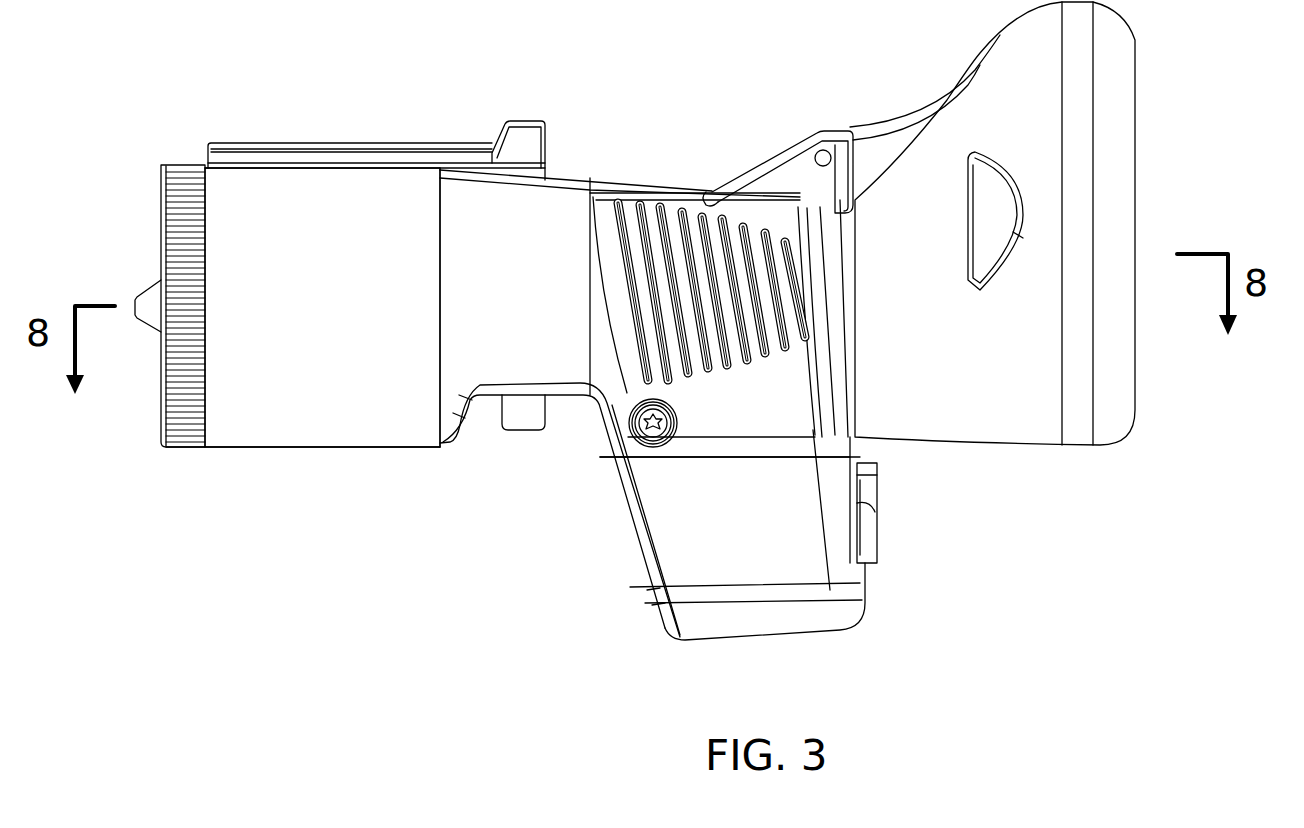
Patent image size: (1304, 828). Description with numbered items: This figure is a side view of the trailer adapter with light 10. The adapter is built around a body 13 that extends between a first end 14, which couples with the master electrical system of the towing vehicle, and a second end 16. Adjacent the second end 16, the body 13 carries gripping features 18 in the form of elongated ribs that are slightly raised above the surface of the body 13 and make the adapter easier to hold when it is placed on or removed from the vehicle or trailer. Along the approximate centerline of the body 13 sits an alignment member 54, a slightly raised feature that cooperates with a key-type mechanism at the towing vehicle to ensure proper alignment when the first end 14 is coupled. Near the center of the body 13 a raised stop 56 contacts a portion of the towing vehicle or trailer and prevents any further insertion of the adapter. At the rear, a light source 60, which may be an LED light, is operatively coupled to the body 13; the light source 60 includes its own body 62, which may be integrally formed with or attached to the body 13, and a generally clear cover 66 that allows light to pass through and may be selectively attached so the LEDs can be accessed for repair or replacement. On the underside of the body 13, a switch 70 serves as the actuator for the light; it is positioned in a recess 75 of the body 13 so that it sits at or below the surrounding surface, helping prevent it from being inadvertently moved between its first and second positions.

The trailer adapter with light 10 is at (183, 135).
The body 13 is at (670, 535).
The first end 14 is at (140, 247).
The second end 16 is at (898, 470).
The gripping features 18 is at (668, 205).
The alignment member 54 is at (350, 145).
The stop 56 is at (520, 120).
The light source 60 is at (1130, 107).
The body of the light source 62 is at (906, 200).
The cover 66 is at (1125, 355).
The switch 70 is at (530, 428).
The recess 75 is at (462, 420).